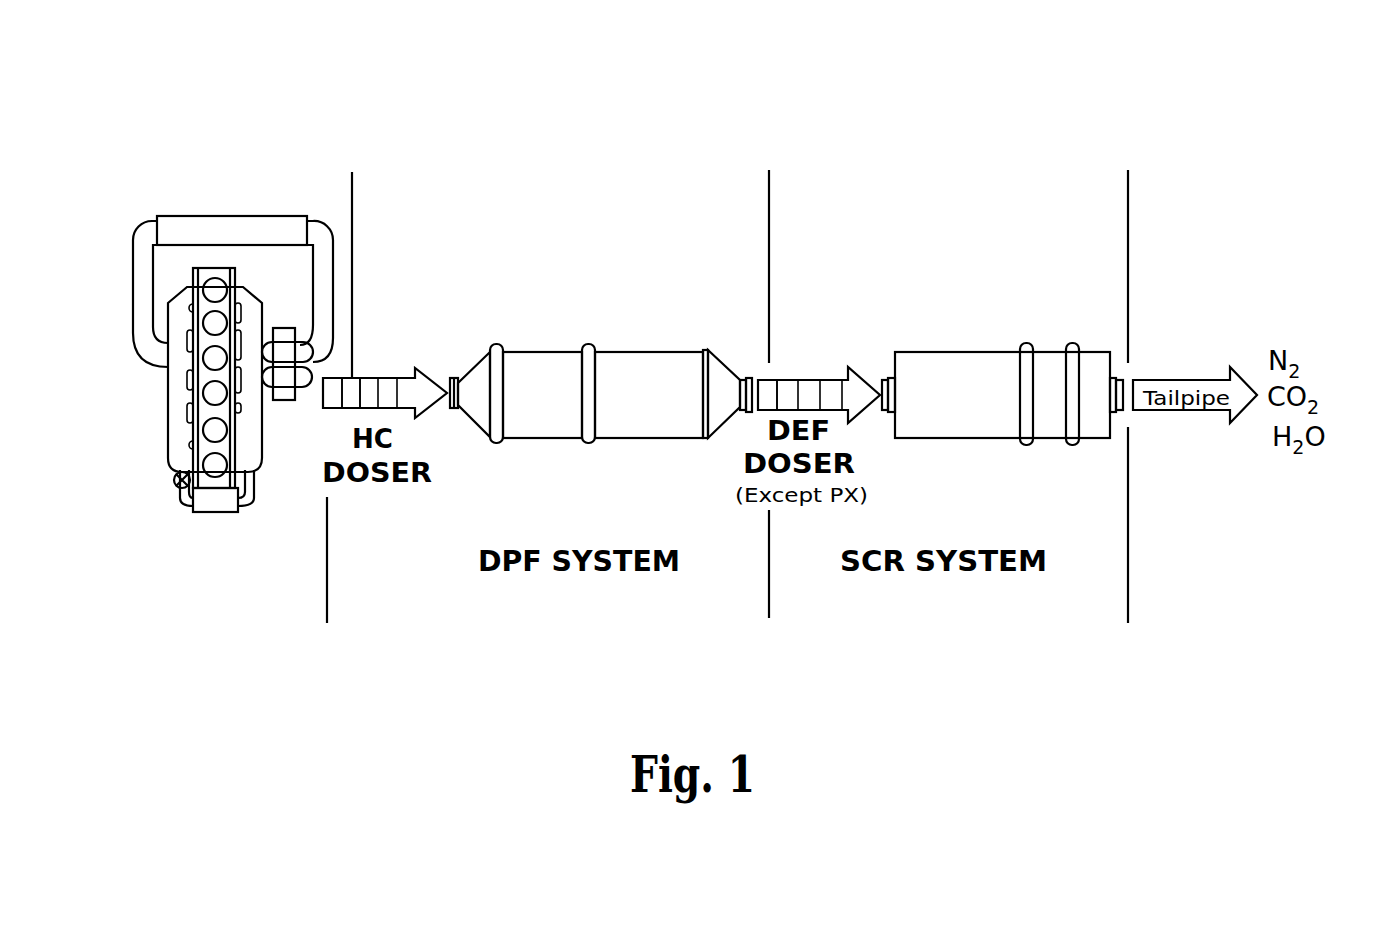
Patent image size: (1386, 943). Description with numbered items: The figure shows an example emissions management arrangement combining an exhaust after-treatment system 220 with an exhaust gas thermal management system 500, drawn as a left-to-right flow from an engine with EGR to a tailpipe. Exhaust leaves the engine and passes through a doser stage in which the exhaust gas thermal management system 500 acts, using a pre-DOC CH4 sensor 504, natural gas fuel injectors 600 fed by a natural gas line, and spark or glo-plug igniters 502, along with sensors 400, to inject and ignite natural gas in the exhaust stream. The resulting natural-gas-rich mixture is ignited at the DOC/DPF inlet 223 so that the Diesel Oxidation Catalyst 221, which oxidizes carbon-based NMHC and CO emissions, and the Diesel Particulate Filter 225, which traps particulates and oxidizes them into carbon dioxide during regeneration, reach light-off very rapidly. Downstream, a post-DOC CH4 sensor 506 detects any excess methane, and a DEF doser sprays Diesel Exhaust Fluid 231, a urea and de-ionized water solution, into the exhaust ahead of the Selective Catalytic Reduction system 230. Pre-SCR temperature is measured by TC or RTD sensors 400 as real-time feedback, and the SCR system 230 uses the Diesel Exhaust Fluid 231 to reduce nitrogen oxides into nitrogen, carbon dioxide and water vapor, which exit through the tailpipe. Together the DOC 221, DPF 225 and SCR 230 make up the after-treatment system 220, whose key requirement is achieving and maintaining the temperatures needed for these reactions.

The exhaust gas thermal management system 500 is at (305, 170).
The pre-DOC CH4 sensor 504 is at (335, 378).
The NG fuel injector 600 is at (352, 378).
The igniter 502 is at (372, 378).
The sensors 400 is at (392, 378).
The DOC/DPF inlet 223 is at (450, 410).
The Diesel Oxidation Catalyst 221 is at (533, 430).
The Diesel Particulate Filter 225 is at (663, 440).
The post-DOC CH4 sensor 506 is at (772, 383).
The Diesel Exhaust Fluid 231 is at (788, 382).
The after-treatment system 220 is at (1002, 292).
The Selective Catalytic Reduction system 230 is at (963, 430).